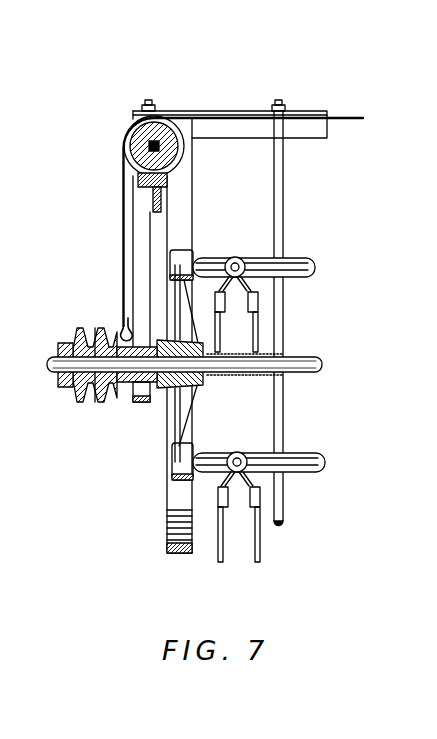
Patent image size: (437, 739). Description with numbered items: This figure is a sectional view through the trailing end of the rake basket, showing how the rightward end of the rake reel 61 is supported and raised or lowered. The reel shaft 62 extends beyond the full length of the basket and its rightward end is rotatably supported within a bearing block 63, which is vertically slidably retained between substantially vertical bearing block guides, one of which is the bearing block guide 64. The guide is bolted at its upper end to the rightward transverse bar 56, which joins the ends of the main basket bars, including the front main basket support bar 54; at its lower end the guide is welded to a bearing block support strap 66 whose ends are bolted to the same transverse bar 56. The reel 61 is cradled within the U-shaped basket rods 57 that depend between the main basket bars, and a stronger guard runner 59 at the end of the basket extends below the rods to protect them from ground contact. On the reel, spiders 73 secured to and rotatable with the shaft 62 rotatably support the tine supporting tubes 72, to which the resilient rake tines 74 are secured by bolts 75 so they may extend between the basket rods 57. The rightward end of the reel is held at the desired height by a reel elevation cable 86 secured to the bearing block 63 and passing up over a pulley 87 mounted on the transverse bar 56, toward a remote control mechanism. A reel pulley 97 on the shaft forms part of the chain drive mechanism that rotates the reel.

The front main basket support bar 54 is at (310, 128).
The rightward transverse bar 56 is at (138, 178).
The U-shaped basket rods 57 is at (280, 297).
The guard runner 59 is at (167, 550).
The rake reel 61 is at (313, 472).
The reel shaft 62 is at (318, 370).
The bearing block 63 is at (123, 383).
The bearing block guide 64 is at (142, 232).
The bearing block support strap 66 is at (140, 402).
The tine supporting tube 72 is at (307, 257).
The spider 73 is at (188, 394).
The rake tines 74 is at (258, 325).
The bolts 75 is at (235, 257).
The reel elevation cable 86 is at (352, 116).
The pulley 87 is at (163, 126).
The reel pulley 97 is at (90, 335).